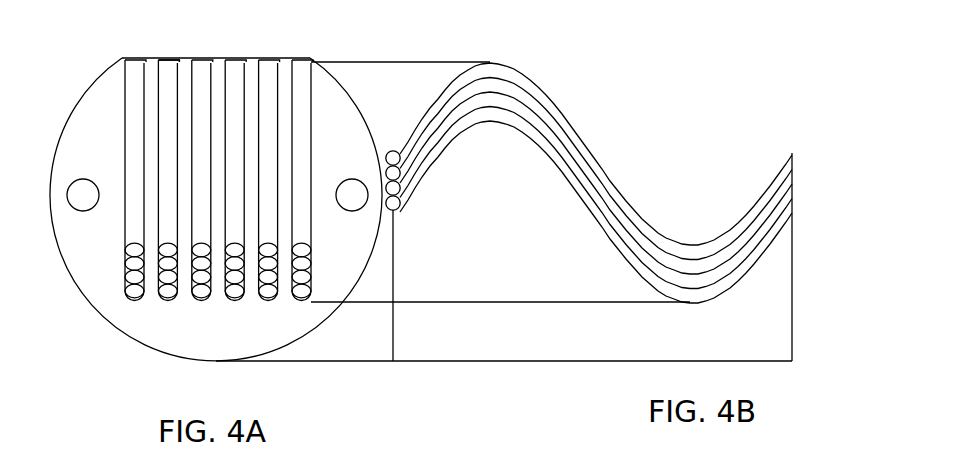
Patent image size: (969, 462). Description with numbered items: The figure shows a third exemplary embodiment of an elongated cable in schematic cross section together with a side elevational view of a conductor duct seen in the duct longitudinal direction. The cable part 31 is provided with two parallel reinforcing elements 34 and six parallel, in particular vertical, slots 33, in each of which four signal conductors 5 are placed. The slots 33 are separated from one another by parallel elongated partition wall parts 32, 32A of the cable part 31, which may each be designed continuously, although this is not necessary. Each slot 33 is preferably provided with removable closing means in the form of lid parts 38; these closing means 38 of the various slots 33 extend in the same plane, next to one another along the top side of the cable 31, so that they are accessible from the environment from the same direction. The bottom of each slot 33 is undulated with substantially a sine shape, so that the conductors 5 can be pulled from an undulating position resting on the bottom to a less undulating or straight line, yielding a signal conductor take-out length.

In FIG. 4A, the cable part 31 is at (72, 96).
In FIG. 4A, the partition wall part 32 is at (333, 118).
In FIG. 4B, the partition wall part 32 is at (772, 277).
In FIG. 4A, the partition wall part 32A is at (185, 275).
In FIG. 4A, the slot 33 is at (168, 215).
In FIG. 4B, the slot 33 is at (704, 216).
In FIG. 4A, the reinforcing element 34 is at (83, 195).
In FIG. 4A, the lid part 38 is at (170, 61).
In FIG. 4A, the signal conductor 5 is at (302, 249).
In FIG. 4B, the signal conductor 5 is at (595, 167).